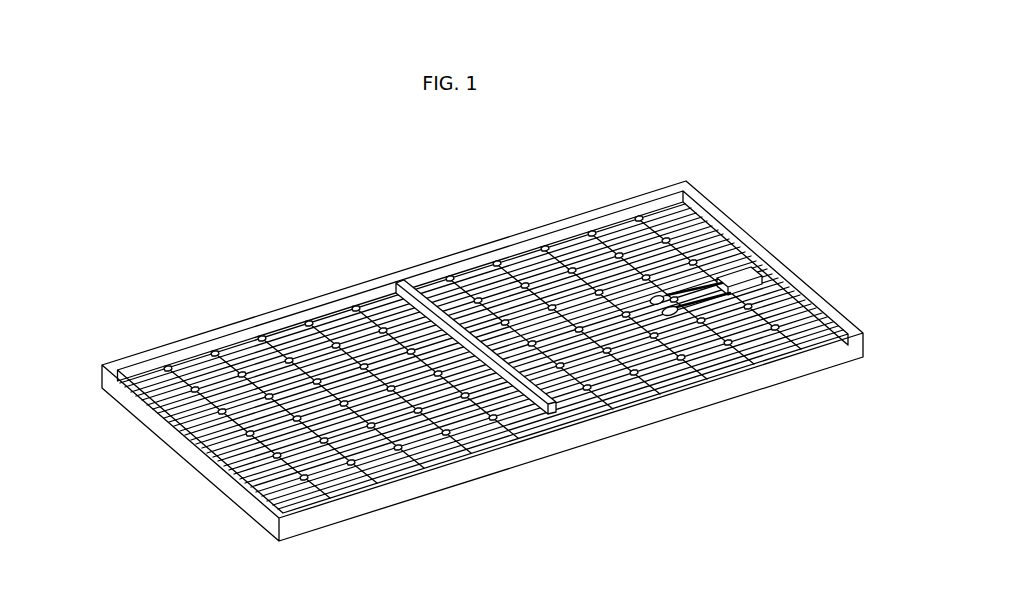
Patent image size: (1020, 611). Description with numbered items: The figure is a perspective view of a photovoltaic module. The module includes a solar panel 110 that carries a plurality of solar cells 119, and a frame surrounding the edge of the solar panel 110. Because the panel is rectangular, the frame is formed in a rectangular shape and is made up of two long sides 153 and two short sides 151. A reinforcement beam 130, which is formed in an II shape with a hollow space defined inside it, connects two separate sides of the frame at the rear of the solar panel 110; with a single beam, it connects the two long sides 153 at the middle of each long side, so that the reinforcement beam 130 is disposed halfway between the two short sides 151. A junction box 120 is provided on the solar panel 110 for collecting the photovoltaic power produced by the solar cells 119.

The solar panel 110 is at (530, 281).
The solar cells 119 is at (607, 240).
The junction box 120 is at (742, 270).
The reinforcement beam 130 is at (546, 412).
The short sides 151 is at (200, 462).
The long sides 153 is at (374, 283).